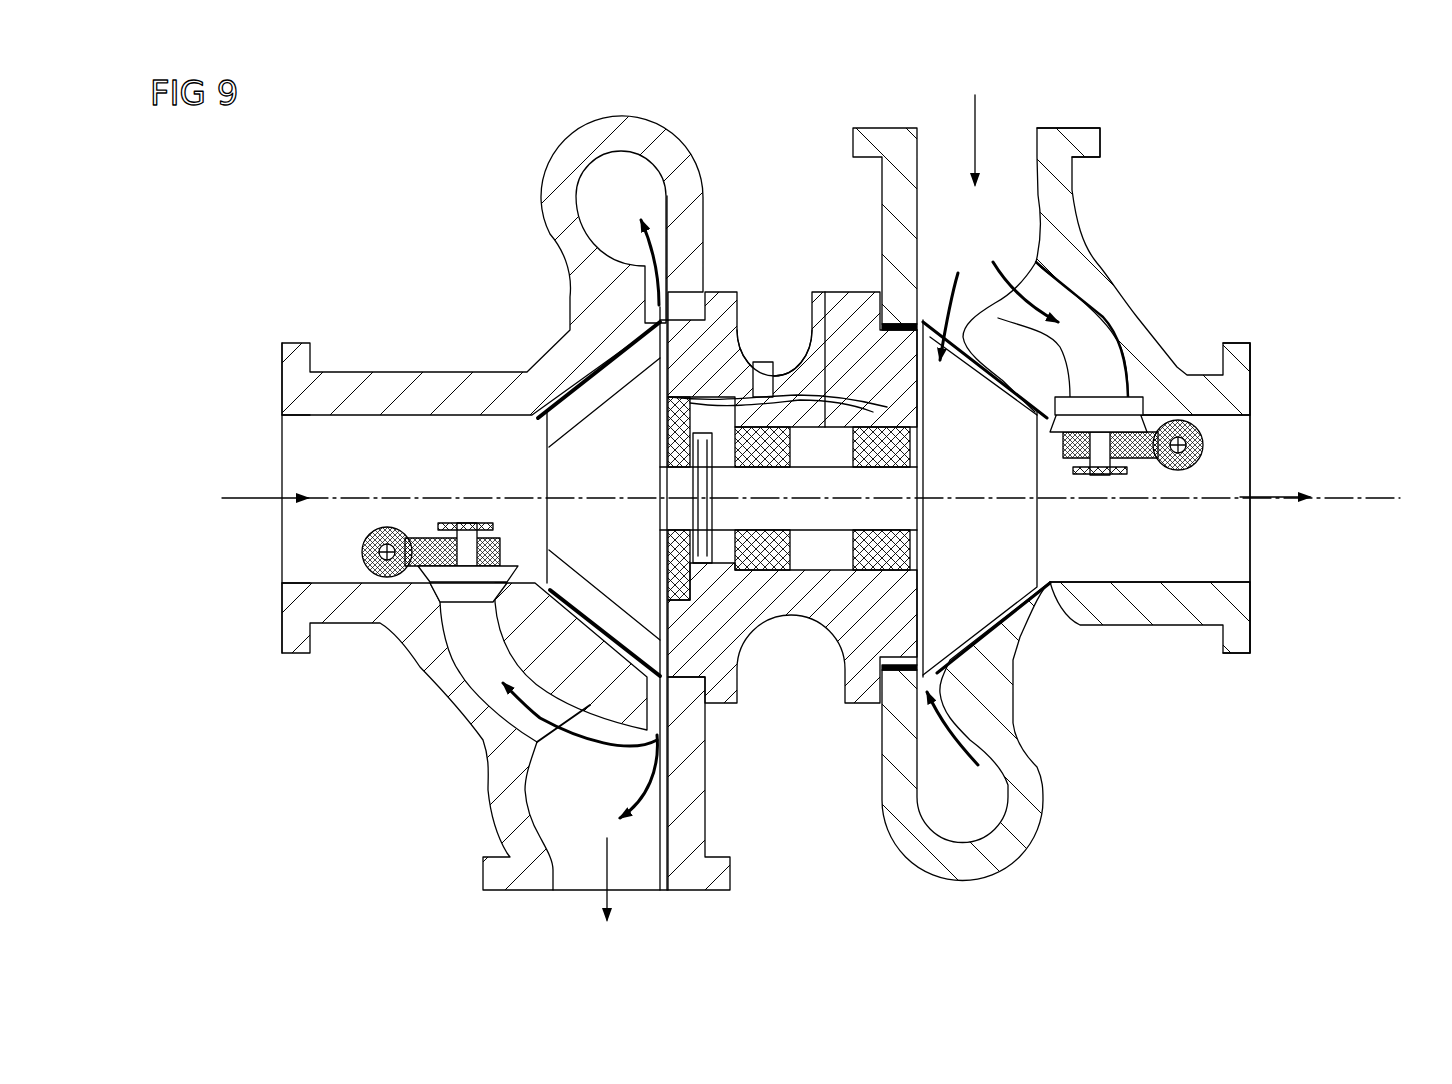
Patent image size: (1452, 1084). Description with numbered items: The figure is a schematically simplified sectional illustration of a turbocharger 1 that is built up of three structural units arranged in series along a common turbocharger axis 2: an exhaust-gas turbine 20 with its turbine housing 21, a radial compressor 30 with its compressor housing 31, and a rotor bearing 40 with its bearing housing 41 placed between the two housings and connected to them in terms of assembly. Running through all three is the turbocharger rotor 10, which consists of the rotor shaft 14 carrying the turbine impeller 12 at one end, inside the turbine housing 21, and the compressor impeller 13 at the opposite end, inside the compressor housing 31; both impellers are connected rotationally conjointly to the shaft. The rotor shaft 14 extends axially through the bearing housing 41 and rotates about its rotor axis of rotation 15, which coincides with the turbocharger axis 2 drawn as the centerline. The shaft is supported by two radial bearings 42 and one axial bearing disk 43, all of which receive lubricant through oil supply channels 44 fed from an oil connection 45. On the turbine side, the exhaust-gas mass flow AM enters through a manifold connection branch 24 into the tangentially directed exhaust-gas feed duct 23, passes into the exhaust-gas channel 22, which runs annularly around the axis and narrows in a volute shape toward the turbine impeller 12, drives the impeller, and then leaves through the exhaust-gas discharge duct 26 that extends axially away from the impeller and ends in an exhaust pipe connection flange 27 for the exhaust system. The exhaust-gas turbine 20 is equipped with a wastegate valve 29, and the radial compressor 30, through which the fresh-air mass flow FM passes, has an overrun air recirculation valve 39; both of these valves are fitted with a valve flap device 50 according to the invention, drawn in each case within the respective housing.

The turbocharger 1 is at (1225, 139).
The turbocharger axis 2 is at (1397, 492).
The turbocharger rotor 10 is at (1064, 515).
The turbine impeller 12 is at (1013, 533).
The compressor impeller 13 is at (545, 465).
The rotor shaft 14 is at (813, 520).
The rotor axis of rotation 15 is at (885, 440).
The exhaust-gas turbine 20 is at (1178, 728).
The turbine housing 21 is at (1100, 277).
The exhaust-gas channel 22 is at (985, 808).
The exhaust-gas feed duct 23 is at (950, 150).
The manifold connection branch 24 is at (1068, 145).
The exhaust-gas discharge duct 26 is at (1169, 497).
The exhaust pipe connection flange 27 is at (1205, 600).
The wastegate valve 29 is at (1200, 565).
The radial compressor 30 is at (372, 783).
The compressor housing 31 is at (454, 705).
The overrun air recirculation valve 39 is at (413, 480).
The rotor bearing 40 is at (797, 794).
The bearing housing 41 is at (720, 610).
The radial bearings 42 is at (868, 330).
The axial bearing disk 43 is at (717, 335).
The oil supply channels 44 is at (805, 400).
The oil connection 45 is at (770, 348).
The valve flap device 50 is at (353, 558).